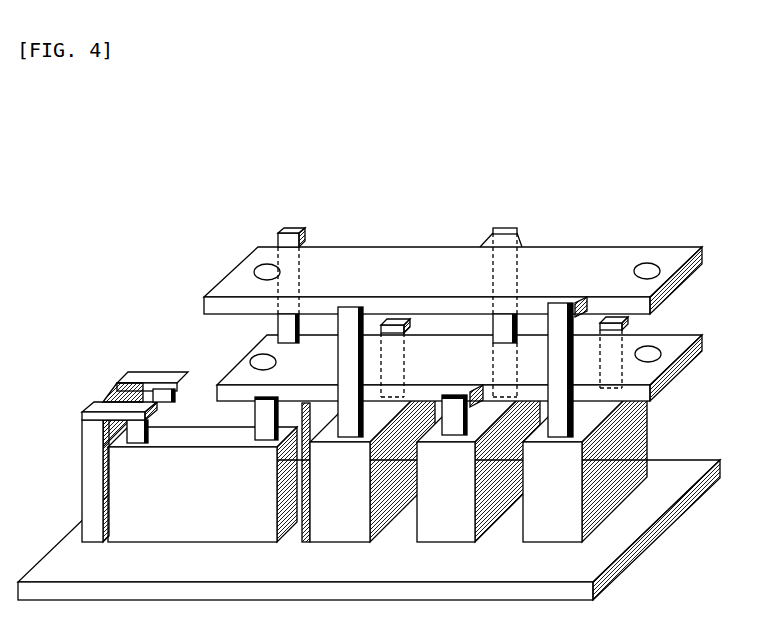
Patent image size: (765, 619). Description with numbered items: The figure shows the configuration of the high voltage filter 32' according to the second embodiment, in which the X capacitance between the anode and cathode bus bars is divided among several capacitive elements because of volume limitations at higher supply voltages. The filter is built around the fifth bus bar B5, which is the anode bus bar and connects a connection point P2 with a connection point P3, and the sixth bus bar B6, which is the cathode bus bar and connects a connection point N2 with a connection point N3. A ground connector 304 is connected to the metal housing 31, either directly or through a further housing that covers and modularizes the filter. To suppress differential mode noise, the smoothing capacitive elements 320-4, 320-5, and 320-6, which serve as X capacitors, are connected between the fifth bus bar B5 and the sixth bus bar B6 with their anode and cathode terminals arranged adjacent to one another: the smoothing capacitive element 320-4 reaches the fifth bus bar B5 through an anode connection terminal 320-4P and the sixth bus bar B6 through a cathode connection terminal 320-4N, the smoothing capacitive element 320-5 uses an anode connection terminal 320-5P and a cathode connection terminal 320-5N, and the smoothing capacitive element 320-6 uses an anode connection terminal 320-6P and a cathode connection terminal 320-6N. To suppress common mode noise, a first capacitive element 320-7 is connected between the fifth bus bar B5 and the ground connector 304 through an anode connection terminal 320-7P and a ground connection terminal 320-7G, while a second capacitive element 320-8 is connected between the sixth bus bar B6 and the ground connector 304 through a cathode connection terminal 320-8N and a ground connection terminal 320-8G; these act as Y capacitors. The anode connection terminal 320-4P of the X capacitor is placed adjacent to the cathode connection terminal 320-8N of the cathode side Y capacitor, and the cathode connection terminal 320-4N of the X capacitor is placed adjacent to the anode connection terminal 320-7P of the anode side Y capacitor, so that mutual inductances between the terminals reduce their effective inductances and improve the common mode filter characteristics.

The metal housing 31 is at (369, 530).
The high voltage filter 32' is at (561, 112).
The ground connector 304 is at (116, 447).
The smoothing capacitive element 320-4 is at (388, 476).
The smoothing capacitive element 320-5 is at (490, 476).
The smoothing capacitive element 320-6 is at (624, 459).
The first capacitive element 320-7 is at (208, 504).
The second capacitive element 320-8 is at (170, 374).
The cathode connection terminal 320-4N is at (369, 314).
The anode connection terminal 320-4P is at (422, 303).
The cathode connection terminal 320-5N is at (514, 291).
The anode connection terminal 320-5P is at (468, 298).
The cathode connection terminal 320-6N is at (574, 325).
The anode connection terminal 320-6P is at (631, 287).
The ground connection terminal 320-7G is at (140, 458).
The anode connection terminal 320-7P is at (238, 444).
The ground connection terminal 320-8G is at (157, 355).
The cathode connection terminal 320-8N is at (284, 257).
The fifth bus bar B5 is at (467, 347).
The sixth bus bar B6 is at (456, 255).
The connection point N2 is at (258, 281).
The connection point N3 is at (658, 265).
The connection point P2 is at (254, 371).
The connection point P3 is at (660, 349).